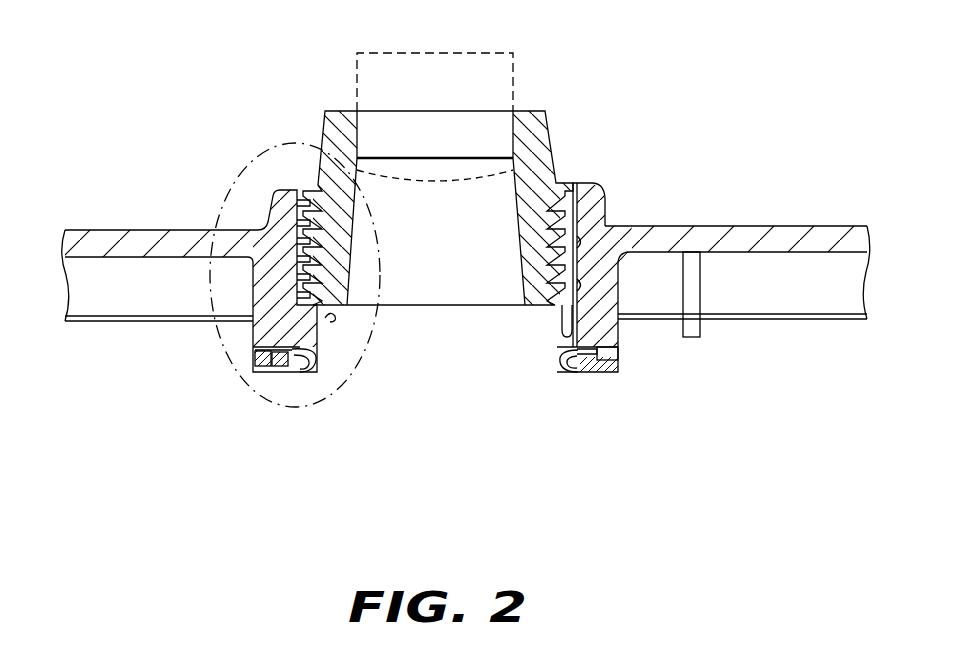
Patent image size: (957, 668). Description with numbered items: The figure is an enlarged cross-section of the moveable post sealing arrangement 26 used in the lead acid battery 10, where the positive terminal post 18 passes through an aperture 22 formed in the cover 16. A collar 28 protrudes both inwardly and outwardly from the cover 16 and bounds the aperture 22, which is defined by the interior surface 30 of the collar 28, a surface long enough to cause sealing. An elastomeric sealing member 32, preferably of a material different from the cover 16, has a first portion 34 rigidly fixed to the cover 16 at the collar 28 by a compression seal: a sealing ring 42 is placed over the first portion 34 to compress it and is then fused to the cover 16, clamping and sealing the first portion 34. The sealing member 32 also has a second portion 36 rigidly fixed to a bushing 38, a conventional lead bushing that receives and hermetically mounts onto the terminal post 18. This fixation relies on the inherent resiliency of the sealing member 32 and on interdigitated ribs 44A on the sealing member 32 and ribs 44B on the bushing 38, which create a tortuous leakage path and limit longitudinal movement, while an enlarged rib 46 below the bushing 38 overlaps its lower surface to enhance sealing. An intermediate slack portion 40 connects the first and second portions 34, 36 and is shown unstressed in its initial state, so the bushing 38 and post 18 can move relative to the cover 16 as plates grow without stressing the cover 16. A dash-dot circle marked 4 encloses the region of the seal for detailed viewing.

The lead acid battery 10 is at (738, 80).
The cover 16 is at (723, 233).
The positive terminal post 18 is at (470, 75).
The aperture 22 is at (572, 182).
The moveable post sealing arrangement 26 is at (322, 352).
The collar 28 is at (593, 187).
The interior surface 30 is at (298, 243).
The sealing member 32 is at (548, 336).
The first portion 34 is at (572, 377).
The second portion 36 is at (548, 276).
The bushing 38 is at (440, 224).
The intermediate slack portion 40 is at (557, 357).
The sealing ring 42 is at (612, 354).
The ribs 44A is at (577, 222).
The ribs 44B is at (572, 243).
The enlarged rib 46 is at (330, 313).
The detail circle (FIG. 4) 4 is at (328, 407).